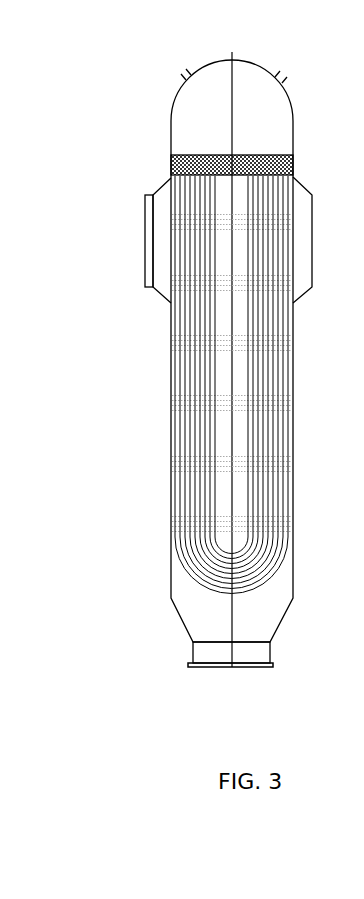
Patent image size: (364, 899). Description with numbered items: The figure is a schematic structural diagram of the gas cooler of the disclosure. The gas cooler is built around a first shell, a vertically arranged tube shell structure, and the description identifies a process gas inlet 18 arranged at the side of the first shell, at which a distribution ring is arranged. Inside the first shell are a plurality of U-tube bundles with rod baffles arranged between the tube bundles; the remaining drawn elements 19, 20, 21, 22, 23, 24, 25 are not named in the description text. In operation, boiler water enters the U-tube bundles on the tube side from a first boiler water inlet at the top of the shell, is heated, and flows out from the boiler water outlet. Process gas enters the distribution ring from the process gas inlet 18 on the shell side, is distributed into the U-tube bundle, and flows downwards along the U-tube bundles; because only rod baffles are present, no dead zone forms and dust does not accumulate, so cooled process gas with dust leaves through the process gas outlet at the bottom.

The process gas inlet 18 is at (143, 212).
The outlet nozzle 19 is at (207, 662).
The shell 20 is at (160, 190).
The inner tube 21 is at (202, 440).
The outer tube 22 is at (202, 400).
The head 23 is at (183, 76).
The head weld seam 24 is at (278, 72).
The tube sheet 25 is at (232, 143).